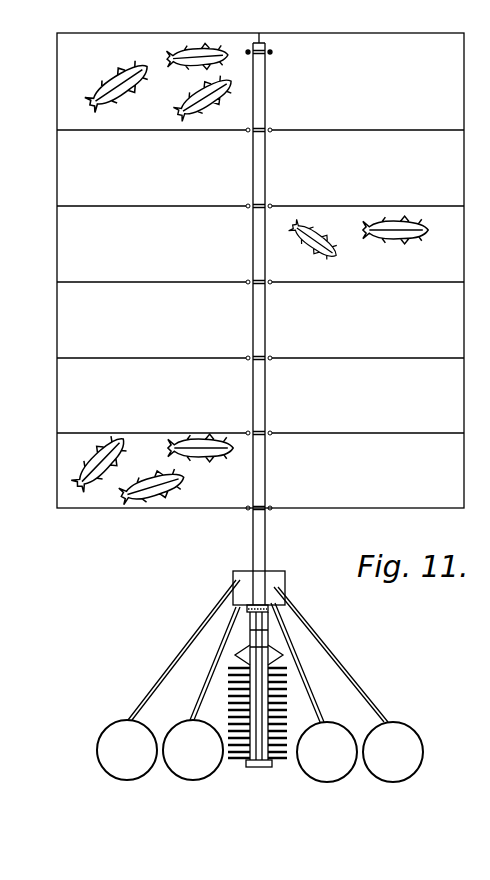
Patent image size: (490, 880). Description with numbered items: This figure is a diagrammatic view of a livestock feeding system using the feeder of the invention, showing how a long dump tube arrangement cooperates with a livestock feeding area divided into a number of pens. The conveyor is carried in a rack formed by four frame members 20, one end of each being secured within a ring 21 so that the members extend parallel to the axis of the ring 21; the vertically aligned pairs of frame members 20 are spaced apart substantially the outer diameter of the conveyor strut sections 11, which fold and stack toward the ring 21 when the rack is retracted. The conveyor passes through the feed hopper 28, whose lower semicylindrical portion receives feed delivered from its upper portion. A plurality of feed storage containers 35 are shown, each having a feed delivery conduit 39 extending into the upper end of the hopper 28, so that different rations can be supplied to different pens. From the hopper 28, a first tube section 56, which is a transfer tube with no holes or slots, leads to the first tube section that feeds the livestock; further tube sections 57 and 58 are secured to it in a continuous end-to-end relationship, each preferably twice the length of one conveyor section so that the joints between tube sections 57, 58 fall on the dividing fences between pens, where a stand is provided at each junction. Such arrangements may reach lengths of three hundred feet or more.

The strut sections 11 is at (293, 753).
The frame members 20 is at (268, 626).
The ring 21 is at (256, 768).
The feed hopper 28 is at (233, 572).
The feed storage containers 35 is at (139, 761).
The feed delivery conduits 39 is at (177, 658).
The first tube section 56 is at (258, 541).
The tube section 57 is at (265, 476).
The tube section 58 is at (265, 398).